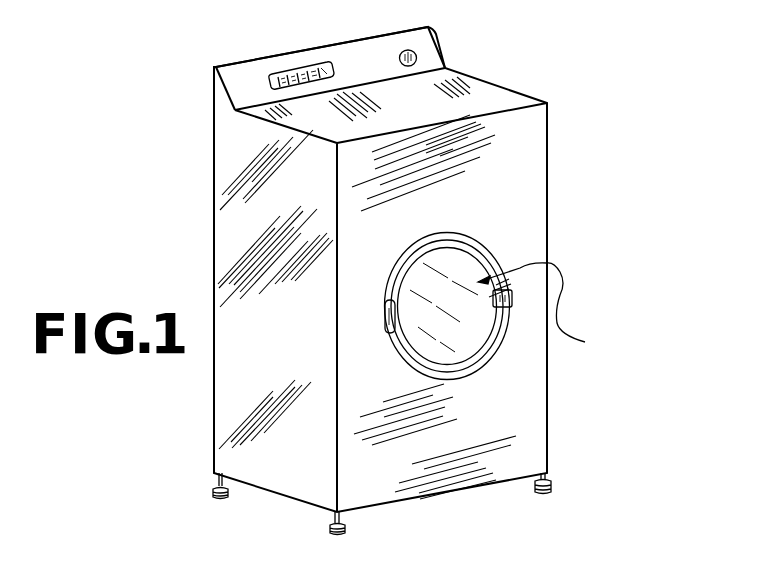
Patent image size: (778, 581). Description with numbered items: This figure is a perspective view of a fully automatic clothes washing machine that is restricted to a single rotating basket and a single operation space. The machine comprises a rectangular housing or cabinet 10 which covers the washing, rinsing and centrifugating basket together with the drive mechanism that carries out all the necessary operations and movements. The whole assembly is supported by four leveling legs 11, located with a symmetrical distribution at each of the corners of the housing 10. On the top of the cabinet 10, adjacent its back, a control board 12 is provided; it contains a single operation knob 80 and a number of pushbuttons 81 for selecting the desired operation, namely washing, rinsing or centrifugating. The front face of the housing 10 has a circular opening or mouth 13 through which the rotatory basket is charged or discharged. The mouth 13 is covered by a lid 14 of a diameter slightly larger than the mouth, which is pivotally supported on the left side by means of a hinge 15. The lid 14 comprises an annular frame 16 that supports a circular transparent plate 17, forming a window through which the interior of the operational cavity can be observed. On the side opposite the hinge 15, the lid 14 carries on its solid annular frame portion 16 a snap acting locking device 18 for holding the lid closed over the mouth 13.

The housing 10 is at (547, 235).
The leveling legs 11 is at (551, 486).
The control board 12 is at (437, 40).
The mouth 13 is at (466, 309).
The lid 14 is at (585, 342).
The hinge 15 is at (388, 325).
The annular frame 16 is at (424, 240).
The circular transparent plate 17 is at (466, 262).
The snap acting locking device 18 is at (509, 308).
The operation knob 80 is at (417, 58).
The pushbuttons 81 is at (292, 73).